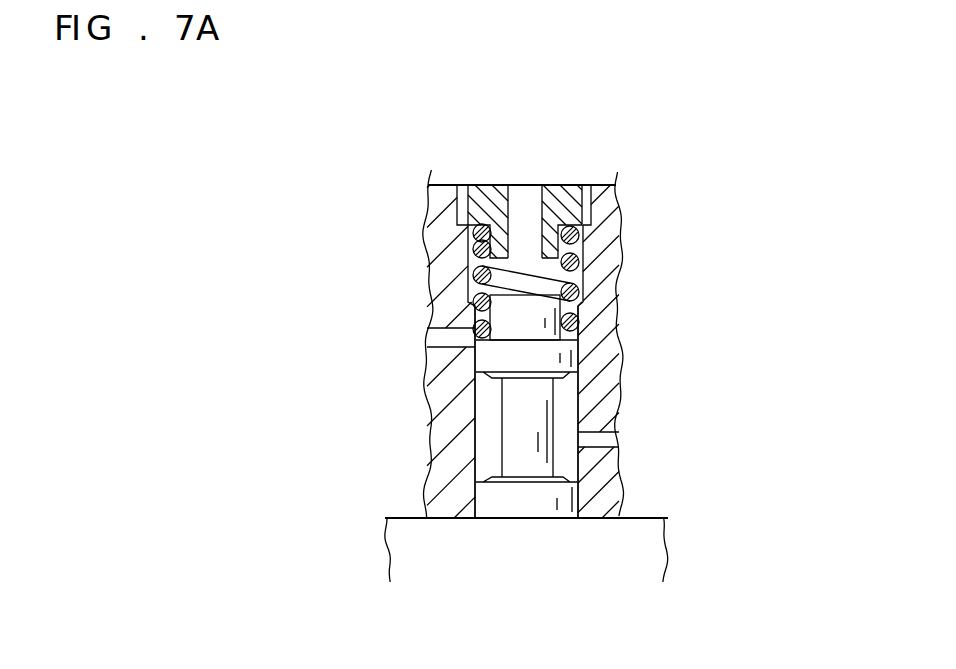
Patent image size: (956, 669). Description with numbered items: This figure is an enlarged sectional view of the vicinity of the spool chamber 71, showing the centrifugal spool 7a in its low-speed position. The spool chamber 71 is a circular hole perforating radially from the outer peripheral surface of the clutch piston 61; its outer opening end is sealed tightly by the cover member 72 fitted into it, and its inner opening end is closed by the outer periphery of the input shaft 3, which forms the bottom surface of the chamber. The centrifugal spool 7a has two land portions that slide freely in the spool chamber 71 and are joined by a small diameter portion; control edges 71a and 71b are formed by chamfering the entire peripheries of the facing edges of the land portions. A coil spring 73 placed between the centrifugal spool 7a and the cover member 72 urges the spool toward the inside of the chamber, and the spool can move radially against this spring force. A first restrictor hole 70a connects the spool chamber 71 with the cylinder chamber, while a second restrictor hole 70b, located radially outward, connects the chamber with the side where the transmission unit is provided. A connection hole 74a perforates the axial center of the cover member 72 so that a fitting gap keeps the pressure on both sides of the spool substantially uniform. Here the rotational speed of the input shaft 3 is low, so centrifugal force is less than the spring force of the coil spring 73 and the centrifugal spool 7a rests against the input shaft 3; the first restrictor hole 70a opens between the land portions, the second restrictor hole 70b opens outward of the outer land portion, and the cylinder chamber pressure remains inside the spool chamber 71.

The input shaft 3 is at (640, 513).
The centrifugal spool 7a is at (510, 427).
The clutch piston 61 is at (613, 225).
The first restrictor hole 70a is at (618, 460).
The second restrictor hole 70b is at (443, 327).
The spool chamber 71 is at (577, 390).
The control edge 71a is at (480, 481).
The control edge 71b is at (476, 385).
The cover member 72 is at (488, 184).
The coil spring 73 is at (586, 280).
The connection hole 74a is at (523, 184).